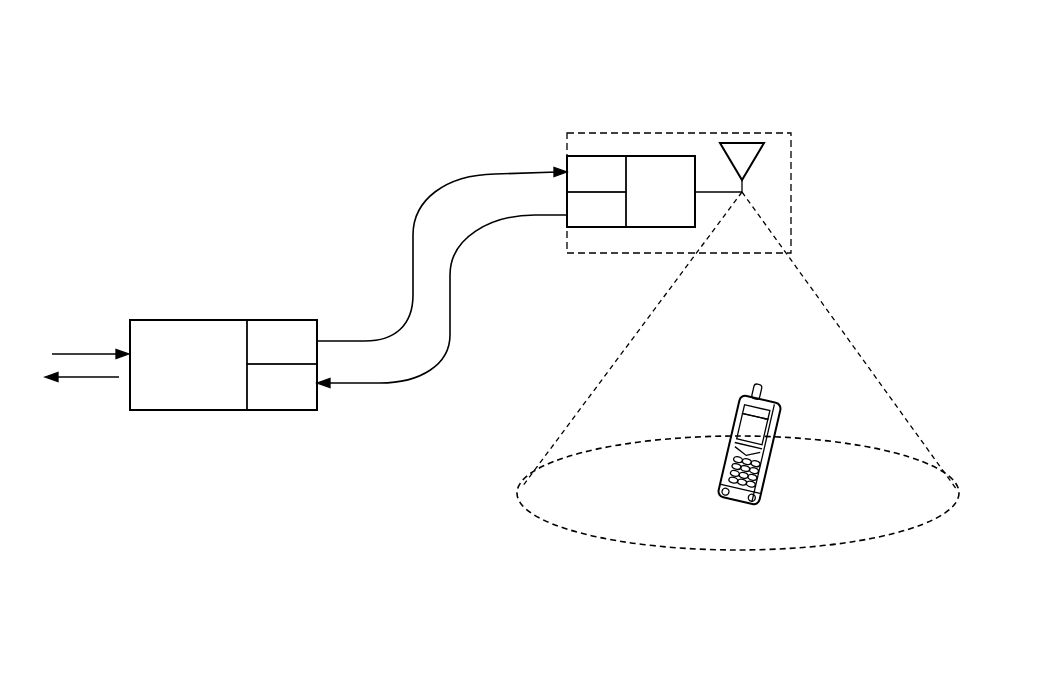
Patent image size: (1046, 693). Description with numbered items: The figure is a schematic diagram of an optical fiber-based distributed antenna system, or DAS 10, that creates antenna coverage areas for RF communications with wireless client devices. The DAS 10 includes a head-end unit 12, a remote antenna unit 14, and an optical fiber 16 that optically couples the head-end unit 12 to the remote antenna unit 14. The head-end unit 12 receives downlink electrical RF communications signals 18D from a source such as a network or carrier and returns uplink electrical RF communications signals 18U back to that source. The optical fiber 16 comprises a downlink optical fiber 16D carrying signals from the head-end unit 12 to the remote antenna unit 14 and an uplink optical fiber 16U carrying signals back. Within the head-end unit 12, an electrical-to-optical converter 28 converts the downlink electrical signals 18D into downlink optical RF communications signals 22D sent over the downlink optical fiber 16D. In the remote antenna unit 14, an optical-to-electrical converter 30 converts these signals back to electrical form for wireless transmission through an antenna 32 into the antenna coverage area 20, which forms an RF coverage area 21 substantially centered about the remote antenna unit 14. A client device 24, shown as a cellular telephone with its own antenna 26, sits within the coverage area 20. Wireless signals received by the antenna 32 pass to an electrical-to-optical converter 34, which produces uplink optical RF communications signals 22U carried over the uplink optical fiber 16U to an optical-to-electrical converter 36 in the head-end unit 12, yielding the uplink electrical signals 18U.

The optical fiber-based distributed antenna system 10 is at (538, 73).
The head-end unit 12 is at (187, 320).
The remote antenna unit 14 is at (658, 133).
The optical fiber 16 is at (380, 173).
The downlink optical fiber 16D is at (492, 174).
The uplink optical fiber 16U is at (480, 229).
The downlink electrical RF communications signals 18D is at (80, 353).
The uplink electrical RF communications signals 18U is at (82, 378).
The antenna coverage area 20 is at (822, 280).
The RF coverage area 21 is at (456, 526).
The downlink optical RF communications signals 22D is at (402, 226).
The uplink optical RF communications signals 22U is at (458, 362).
The client device 24 is at (777, 458).
The antenna 26 is at (748, 382).
The electrical-to-optical converter 28 is at (273, 320).
The optical-to-electrical converter 30 is at (590, 156).
The antenna 32 is at (752, 170).
The electrical-to-optical converter 34 is at (607, 227).
The optical-to-electrical converter 36 is at (277, 410).